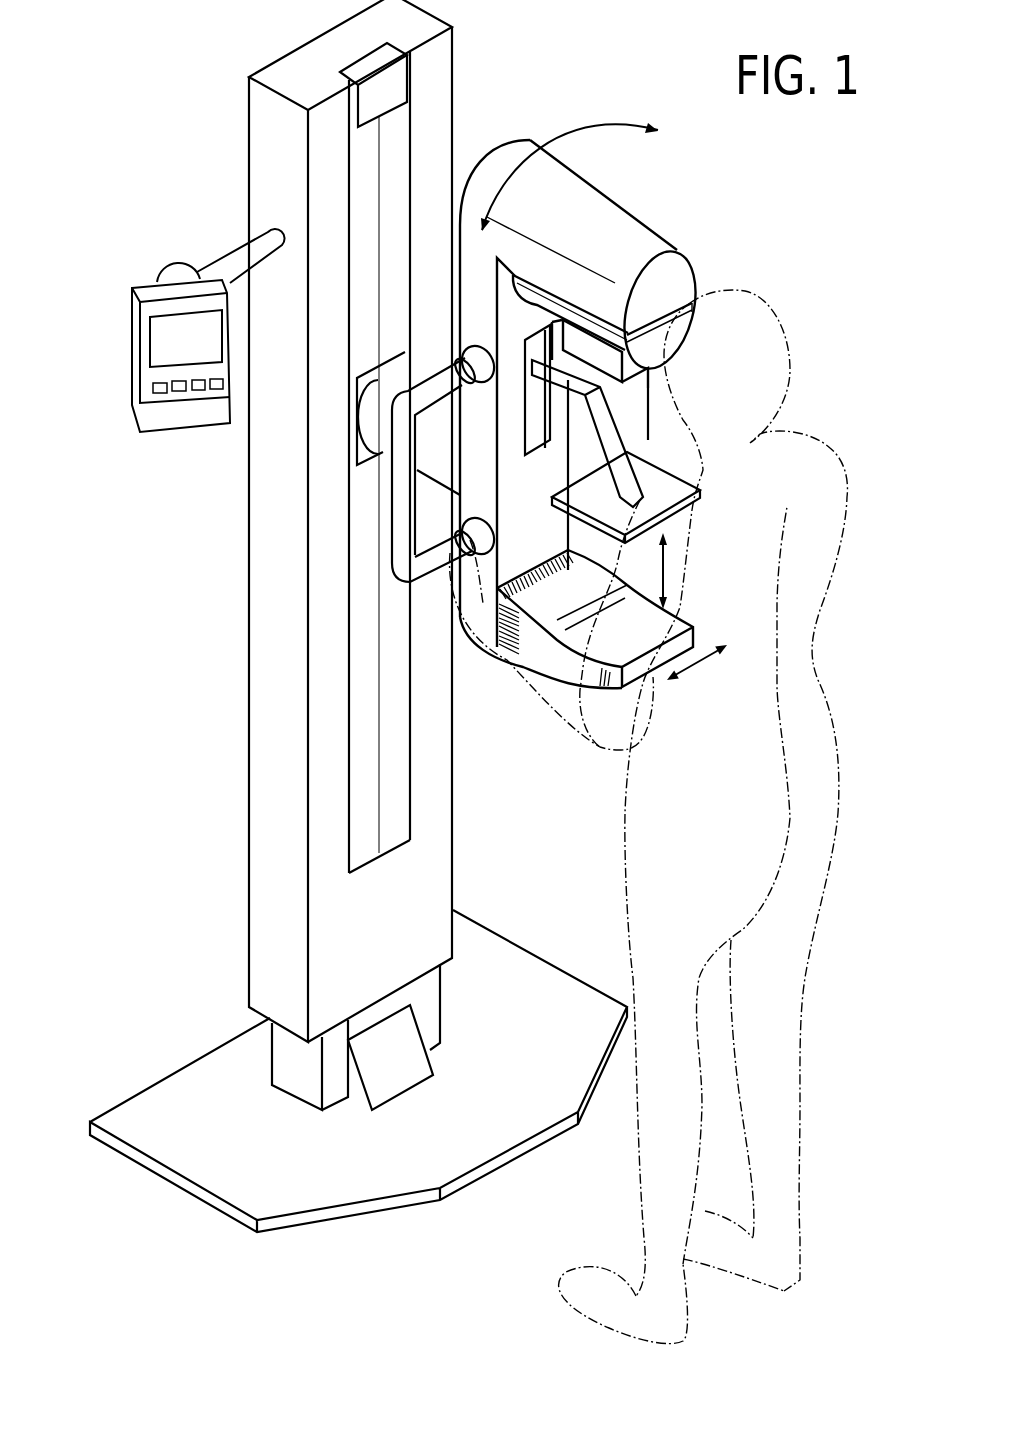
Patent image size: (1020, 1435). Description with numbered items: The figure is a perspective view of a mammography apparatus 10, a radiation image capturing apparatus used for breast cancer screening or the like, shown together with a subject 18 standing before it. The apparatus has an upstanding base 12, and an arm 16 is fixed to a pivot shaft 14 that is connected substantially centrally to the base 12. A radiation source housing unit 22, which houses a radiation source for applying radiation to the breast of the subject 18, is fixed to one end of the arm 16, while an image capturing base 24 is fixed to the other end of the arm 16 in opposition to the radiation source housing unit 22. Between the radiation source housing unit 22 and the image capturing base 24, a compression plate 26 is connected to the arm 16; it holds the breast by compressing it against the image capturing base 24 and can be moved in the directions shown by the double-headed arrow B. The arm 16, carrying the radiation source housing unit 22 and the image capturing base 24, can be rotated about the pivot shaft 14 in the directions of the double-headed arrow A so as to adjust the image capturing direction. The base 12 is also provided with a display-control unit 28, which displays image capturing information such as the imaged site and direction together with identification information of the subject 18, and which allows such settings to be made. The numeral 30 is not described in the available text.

The mammography apparatus 10 is at (838, 191).
The upstanding base 12 is at (263, 592).
The pivot shaft 14 is at (435, 430).
The arm 16 is at (477, 282).
The subject 18 is at (806, 736).
The radiation source housing unit 22 is at (672, 282).
The image capturing base 24 is at (624, 691).
The compression plate 26 is at (661, 493).
The display-control unit 28 is at (160, 342).
The imaging surface 30 is at (612, 637).